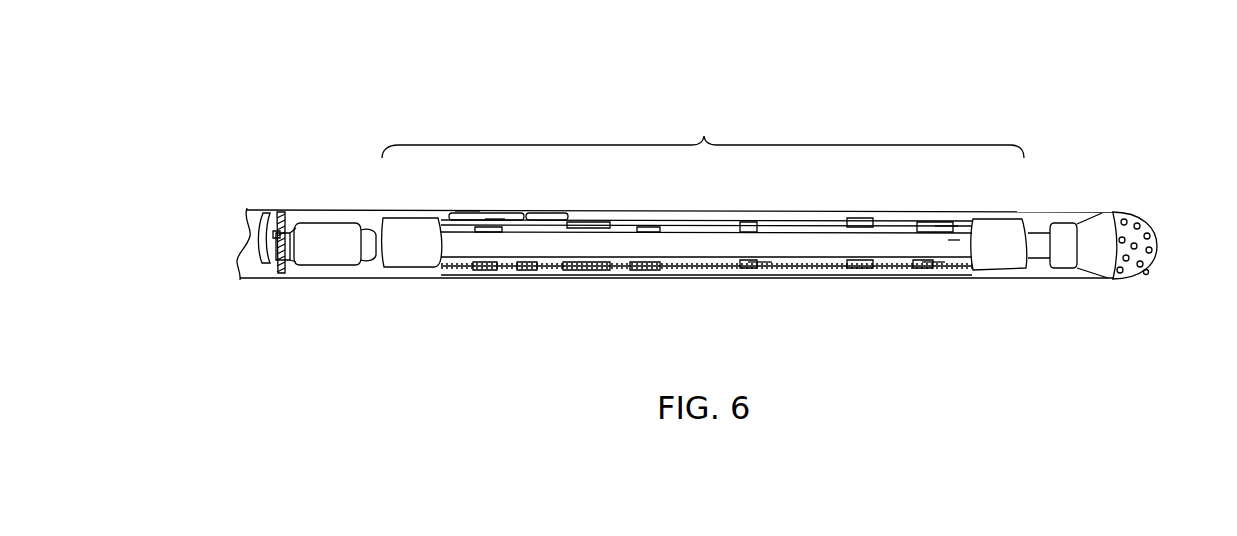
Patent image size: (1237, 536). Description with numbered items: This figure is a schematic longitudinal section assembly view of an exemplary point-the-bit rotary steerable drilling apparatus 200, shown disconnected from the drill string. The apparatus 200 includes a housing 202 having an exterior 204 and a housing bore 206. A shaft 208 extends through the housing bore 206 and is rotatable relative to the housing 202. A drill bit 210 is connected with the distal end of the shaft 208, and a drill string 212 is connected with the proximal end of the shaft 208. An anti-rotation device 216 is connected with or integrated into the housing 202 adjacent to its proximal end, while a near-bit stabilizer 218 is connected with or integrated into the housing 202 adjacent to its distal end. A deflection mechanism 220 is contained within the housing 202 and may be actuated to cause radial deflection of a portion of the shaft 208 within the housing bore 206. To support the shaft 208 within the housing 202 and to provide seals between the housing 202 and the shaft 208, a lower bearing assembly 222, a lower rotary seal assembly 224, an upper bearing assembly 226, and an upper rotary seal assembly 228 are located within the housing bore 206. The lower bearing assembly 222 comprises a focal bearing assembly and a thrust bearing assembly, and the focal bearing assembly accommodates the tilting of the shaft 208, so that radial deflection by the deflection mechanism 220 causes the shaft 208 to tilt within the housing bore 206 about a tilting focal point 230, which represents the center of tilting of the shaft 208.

The point-the-bit rotary steerable drilling apparatus 200 is at (697, 198).
The housing 202 is at (703, 131).
The exterior 204 is at (425, 255).
The housing bore 206 is at (706, 219).
The shaft 208 is at (699, 238).
The drill bit 210 is at (1118, 281).
The drill string 212 is at (280, 277).
The anti-rotation device 216 is at (467, 210).
The near-bit stabilizer 218 is at (948, 226).
The deflection mechanism 220 is at (760, 262).
The lower bearing assembly 222 is at (933, 262).
The lower rotary seal assembly 224 is at (992, 255).
The upper bearing assembly 226 is at (495, 220).
The upper rotary seal assembly 228 is at (393, 256).
The tilting focal point 230 is at (950, 243).